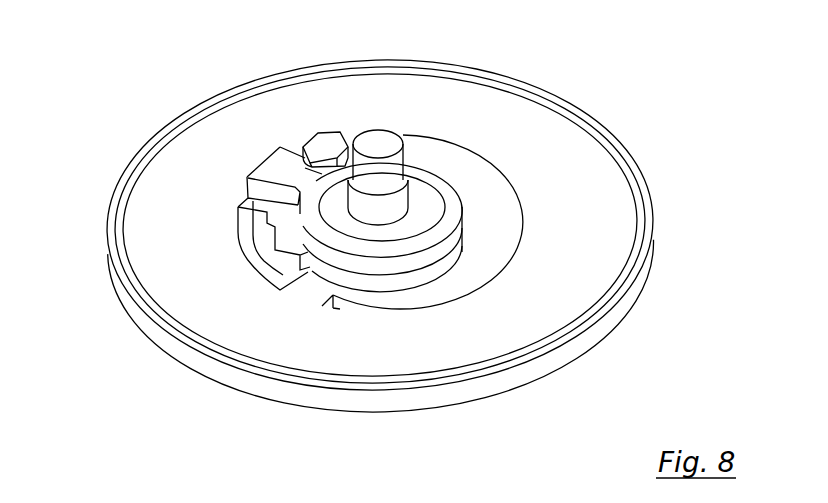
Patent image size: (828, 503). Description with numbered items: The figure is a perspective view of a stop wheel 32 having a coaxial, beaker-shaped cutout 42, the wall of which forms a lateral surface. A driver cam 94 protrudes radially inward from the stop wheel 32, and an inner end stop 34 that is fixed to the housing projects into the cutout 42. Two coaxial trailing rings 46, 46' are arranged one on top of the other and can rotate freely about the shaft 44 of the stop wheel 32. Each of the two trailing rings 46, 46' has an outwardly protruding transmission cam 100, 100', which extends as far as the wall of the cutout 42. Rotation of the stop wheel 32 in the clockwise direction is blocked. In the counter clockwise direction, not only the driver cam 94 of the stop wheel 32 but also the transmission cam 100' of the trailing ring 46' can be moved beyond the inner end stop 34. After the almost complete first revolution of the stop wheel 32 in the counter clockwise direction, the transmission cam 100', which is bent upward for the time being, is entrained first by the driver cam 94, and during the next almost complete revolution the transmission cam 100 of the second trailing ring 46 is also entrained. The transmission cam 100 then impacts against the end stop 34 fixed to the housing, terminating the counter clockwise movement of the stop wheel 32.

The stop wheel 32 is at (492, 103).
The inner end stop 34 is at (326, 147).
The beaker-shaped cutout 42 is at (478, 198).
The shaft 44 is at (380, 142).
The trailing ring 46 is at (481, 181).
The trailing ring 46' is at (509, 223).
The driver cam 94 is at (307, 290).
The transmission cam 100 is at (209, 141).
The transmission cam 100' is at (177, 268).